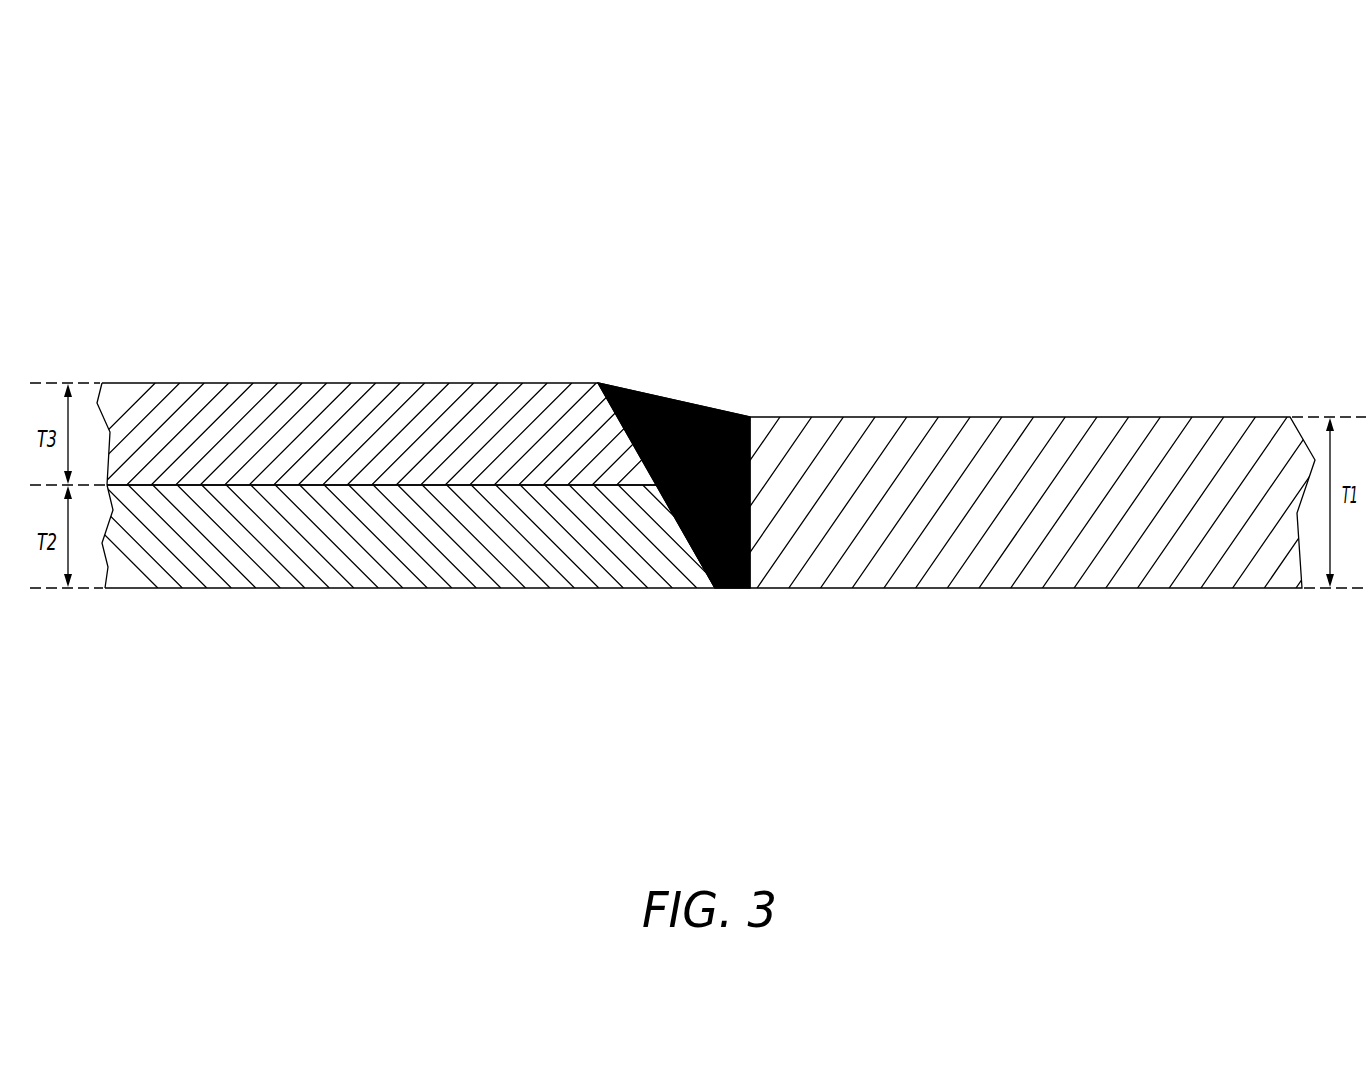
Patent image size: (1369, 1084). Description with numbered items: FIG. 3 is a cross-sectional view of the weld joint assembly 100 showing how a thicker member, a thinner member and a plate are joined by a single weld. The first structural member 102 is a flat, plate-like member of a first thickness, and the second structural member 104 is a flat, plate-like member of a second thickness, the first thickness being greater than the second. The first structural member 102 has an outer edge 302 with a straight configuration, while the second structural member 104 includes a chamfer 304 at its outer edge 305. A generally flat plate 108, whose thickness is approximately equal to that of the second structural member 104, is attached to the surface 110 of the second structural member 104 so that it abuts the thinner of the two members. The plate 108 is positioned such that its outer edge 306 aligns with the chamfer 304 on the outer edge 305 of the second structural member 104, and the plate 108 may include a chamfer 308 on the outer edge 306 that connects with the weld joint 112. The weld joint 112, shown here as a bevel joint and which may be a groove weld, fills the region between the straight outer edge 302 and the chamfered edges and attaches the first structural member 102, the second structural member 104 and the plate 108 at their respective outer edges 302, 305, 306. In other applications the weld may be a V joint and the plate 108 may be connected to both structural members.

The weld joint assembly 100 is at (1187, 124).
The first structural member 102 is at (1038, 523).
The second structural member 104 is at (368, 551).
The plate 108 is at (368, 450).
The surface 110 is at (243, 487).
The weld joint 112 is at (738, 590).
The outer edge 302 is at (750, 443).
The chamfer 304 is at (700, 562).
The outer edge 305 is at (686, 540).
The outer edge 306 is at (608, 403).
The chamfer 308 is at (617, 420).